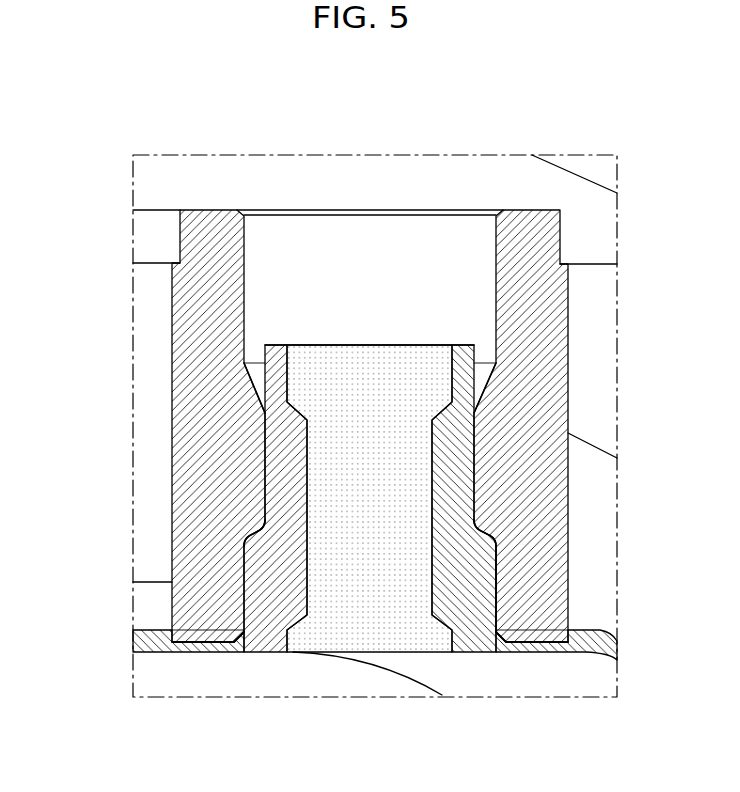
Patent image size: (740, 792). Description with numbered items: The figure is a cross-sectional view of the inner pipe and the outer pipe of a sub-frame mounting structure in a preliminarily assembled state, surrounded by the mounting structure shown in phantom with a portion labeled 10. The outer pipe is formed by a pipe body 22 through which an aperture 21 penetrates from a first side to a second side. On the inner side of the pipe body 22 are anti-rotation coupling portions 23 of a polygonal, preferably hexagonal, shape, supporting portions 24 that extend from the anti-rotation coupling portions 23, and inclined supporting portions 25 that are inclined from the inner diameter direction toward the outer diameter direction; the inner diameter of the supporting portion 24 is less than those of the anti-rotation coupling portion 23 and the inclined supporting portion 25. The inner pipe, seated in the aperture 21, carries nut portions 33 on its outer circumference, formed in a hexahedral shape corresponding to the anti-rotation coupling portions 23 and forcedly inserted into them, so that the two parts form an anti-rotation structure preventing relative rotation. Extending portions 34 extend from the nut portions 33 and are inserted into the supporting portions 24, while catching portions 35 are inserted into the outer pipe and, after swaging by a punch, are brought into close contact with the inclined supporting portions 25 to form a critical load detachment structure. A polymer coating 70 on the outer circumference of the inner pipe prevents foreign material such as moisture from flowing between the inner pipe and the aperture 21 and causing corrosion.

The housing body 10 is at (148, 590).
The aperture 21 is at (358, 309).
The pipe body 22 is at (206, 209).
The anti-rotation coupling portion 23 is at (244, 616).
The supporting portion 24 is at (268, 466).
The inclined supporting portion 25 is at (258, 382).
The nut portion 33 is at (268, 622).
The extending portion 34 is at (283, 498).
The catching portion 35 is at (278, 344).
The polymer coating 70 is at (501, 622).